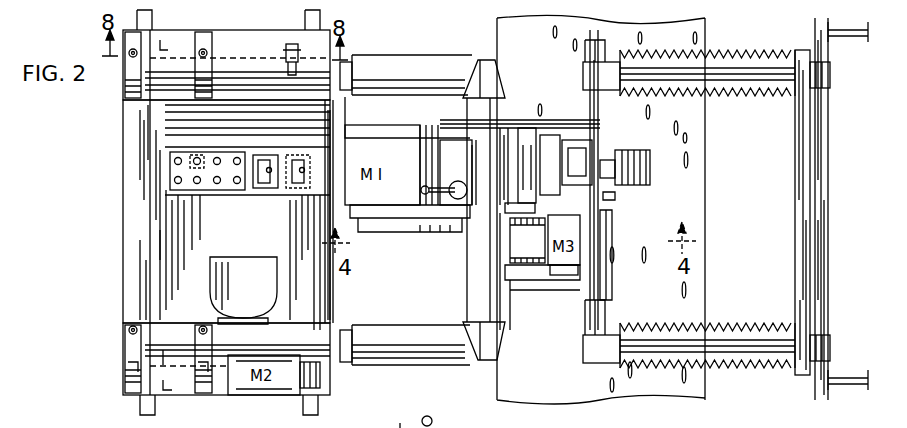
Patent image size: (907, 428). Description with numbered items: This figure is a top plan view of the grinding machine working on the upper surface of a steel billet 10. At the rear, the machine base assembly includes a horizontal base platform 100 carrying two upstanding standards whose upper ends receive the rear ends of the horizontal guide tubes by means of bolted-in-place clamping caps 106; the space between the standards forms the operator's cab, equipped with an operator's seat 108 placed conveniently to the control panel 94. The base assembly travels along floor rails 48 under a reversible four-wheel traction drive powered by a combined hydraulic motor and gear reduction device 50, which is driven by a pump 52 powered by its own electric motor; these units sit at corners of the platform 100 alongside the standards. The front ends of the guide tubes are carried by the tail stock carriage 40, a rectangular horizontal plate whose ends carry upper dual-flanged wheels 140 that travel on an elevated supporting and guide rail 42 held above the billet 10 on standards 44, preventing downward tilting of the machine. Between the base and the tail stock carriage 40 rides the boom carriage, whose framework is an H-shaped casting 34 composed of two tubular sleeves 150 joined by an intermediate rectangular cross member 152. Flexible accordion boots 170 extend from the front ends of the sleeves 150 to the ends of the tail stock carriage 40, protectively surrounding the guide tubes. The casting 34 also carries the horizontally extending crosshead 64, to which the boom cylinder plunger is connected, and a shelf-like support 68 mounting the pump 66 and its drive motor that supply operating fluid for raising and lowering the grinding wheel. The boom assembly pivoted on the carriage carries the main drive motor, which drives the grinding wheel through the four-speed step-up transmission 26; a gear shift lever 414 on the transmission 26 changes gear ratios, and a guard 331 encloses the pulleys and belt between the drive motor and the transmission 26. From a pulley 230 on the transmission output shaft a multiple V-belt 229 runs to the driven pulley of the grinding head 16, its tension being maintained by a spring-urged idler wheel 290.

The steel billet 10 is at (705, 186).
The grinding head 16 is at (662, 163).
The four-speed step-up transmission 26 is at (465, 168).
The H-shaped casting 34 is at (441, 315).
The tail stock carriage 40 is at (805, 232).
The supporting and guide rail 42 is at (826, 160).
The standards 44 is at (850, 30).
The rails 48 is at (158, 408).
The combined hydraulic motor and gear reduction device 50 is at (302, 44).
The pump 52 is at (312, 378).
The crosshead 64 is at (590, 240).
The pump 66 is at (583, 275).
The shelf-like support 68 is at (535, 258).
The control panel 94 is at (246, 190).
The horizontal base platform 100 is at (128, 287).
The clamping caps 106 is at (210, 62).
The operator's seat 108 is at (248, 262).
The upper dual-flanged wheels 140 is at (828, 86).
The sleeves 150 is at (433, 68).
The cross member 152 is at (470, 285).
The flexible accordion boots 170 is at (741, 52).
The multiple V-belt 229 is at (562, 128).
The pulley 230 is at (500, 426).
The idler wheel 290 is at (518, 128).
The guard 331 is at (404, 416).
The gear shift lever 414 is at (445, 196).